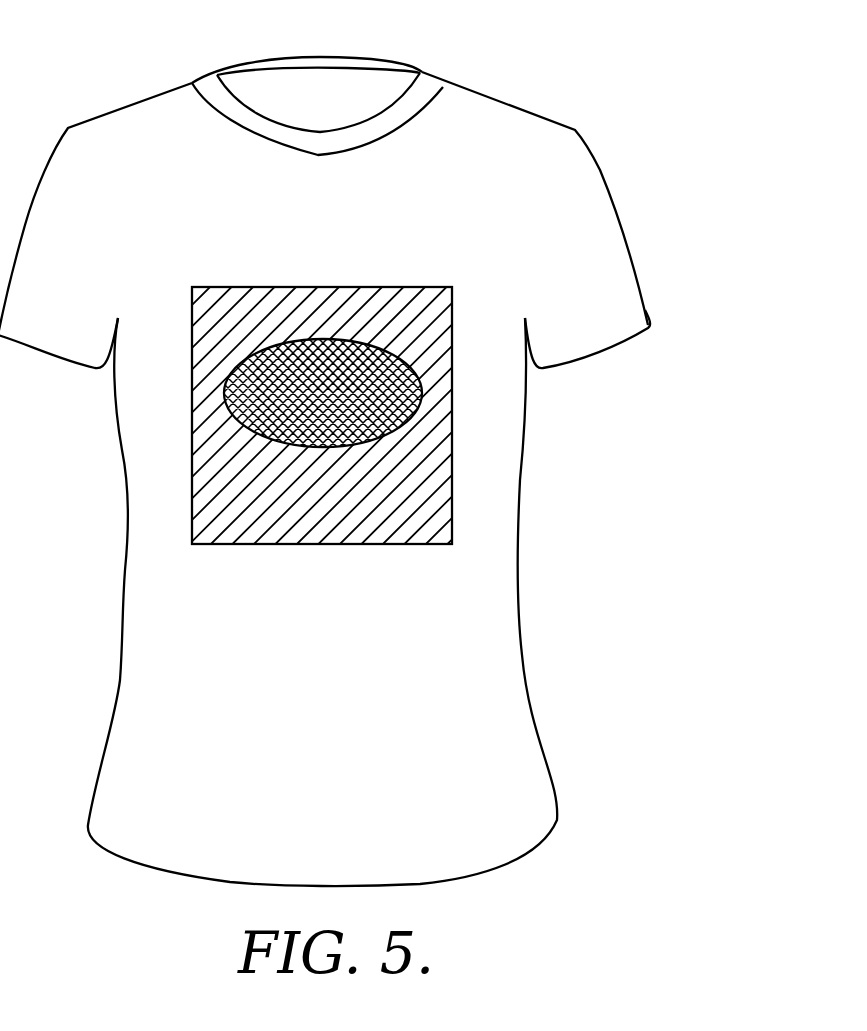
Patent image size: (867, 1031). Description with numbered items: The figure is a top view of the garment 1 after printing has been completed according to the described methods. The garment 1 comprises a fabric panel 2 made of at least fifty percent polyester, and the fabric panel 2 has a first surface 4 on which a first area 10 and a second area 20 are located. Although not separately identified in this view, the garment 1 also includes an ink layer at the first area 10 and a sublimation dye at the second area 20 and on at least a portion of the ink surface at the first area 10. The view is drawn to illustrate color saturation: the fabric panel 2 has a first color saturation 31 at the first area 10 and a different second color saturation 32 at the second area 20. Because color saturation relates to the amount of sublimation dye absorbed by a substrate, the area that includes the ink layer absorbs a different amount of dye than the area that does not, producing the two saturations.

The garment 1 is at (60, 43).
The fabric panel 2 is at (504, 148).
The first surface 4 is at (436, 247).
The first area 10 is at (404, 402).
The second area 20 is at (226, 530).
The first color saturation 31 is at (377, 428).
The second color saturation 32 is at (199, 447).